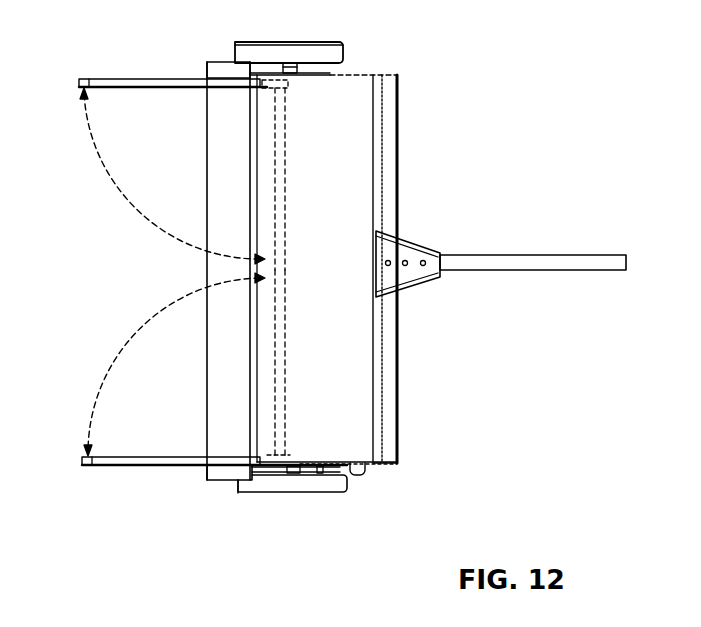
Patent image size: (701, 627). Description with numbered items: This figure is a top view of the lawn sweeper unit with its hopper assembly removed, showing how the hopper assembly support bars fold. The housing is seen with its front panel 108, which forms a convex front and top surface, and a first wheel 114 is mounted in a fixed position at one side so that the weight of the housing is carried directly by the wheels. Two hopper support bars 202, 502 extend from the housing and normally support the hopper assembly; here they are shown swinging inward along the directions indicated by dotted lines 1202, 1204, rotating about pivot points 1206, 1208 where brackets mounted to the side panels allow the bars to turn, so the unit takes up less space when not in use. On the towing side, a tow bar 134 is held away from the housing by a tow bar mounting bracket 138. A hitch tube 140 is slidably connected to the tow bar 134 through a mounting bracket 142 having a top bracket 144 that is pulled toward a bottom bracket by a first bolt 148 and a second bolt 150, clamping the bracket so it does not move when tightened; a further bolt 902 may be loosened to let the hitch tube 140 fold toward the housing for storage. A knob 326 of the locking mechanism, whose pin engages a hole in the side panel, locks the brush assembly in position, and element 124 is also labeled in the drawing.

The front panel 108 is at (365, 380).
The first wheel 114 is at (267, 493).
The lower bracket 124 is at (350, 483).
The tow bar 134 is at (387, 129).
The tow bar mounting bracket 138 is at (378, 463).
The hitch tube 140 is at (590, 254).
The mounting bracket 142 is at (446, 290).
The top bracket 144 is at (400, 276).
The first bolt 148 is at (387, 260).
The second bolt 150 is at (407, 262).
The hopper support bar 202 is at (146, 78).
The knob 326 is at (360, 477).
The hopper support bar 502 is at (142, 465).
The bolt 902 is at (426, 262).
The dotted line 1202 is at (137, 325).
The dotted line 1204 is at (132, 210).
The pivot point 1206 is at (283, 461).
The pivot point 1208 is at (282, 82).